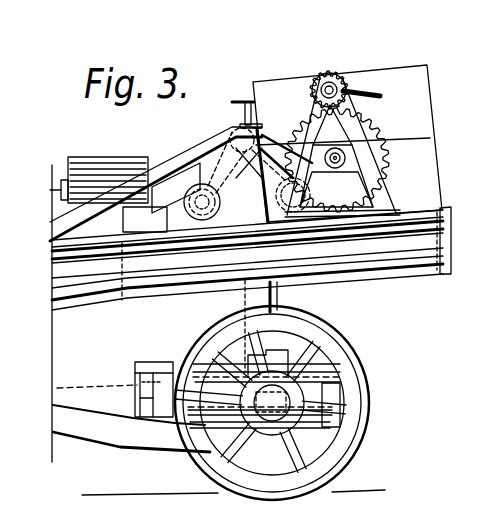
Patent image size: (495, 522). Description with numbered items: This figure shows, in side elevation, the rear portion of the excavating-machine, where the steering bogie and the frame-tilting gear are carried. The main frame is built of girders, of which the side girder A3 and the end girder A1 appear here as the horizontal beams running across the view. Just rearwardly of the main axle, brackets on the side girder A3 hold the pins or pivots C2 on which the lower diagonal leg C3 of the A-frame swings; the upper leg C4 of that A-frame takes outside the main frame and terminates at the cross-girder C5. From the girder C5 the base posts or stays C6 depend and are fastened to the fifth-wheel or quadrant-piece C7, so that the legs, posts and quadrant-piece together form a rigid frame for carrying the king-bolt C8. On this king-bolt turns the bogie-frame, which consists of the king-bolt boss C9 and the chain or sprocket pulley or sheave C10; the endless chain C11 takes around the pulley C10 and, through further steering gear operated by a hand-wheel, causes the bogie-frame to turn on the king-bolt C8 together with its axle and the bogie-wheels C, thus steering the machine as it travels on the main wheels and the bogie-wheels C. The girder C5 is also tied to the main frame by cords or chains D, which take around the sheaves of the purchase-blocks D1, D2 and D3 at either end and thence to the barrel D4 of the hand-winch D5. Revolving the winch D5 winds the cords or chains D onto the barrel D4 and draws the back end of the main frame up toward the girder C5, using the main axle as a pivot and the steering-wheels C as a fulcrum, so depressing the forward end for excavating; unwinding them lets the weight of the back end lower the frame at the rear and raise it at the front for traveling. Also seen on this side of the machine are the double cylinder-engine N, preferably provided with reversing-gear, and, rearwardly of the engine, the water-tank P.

The double cylinder-engine N is at (128, 172).
The upper leg of the A-frame C4 is at (65, 231).
The cross-girder C5 is at (234, 104).
The cords or chains D is at (186, 191).
The purchase-block D1 is at (195, 208).
The base posts or stays C6 is at (260, 169).
The purchase-block D3 is at (262, 138).
The hand-winch D5 is at (353, 115).
The water-tank P is at (347, 143).
The barrel of the hand-winch D4 is at (383, 183).
The purchase-block D2 is at (292, 108).
The end girder A1 is at (448, 240).
The side girder A3 is at (247, 260).
The lower diagonal leg of the A-frame C3 is at (219, 450).
The endless chain C11 is at (92, 378).
The fifth-wheel or quadrant-piece C7 is at (275, 358).
The chain or sprocket pulley or sheave C10 is at (320, 363).
The king-bolt boss C9 is at (366, 382).
The king-bolt C8 is at (302, 432).
The pins or pivots C2 is at (260, 424).
The bogie-wheels C is at (340, 472).